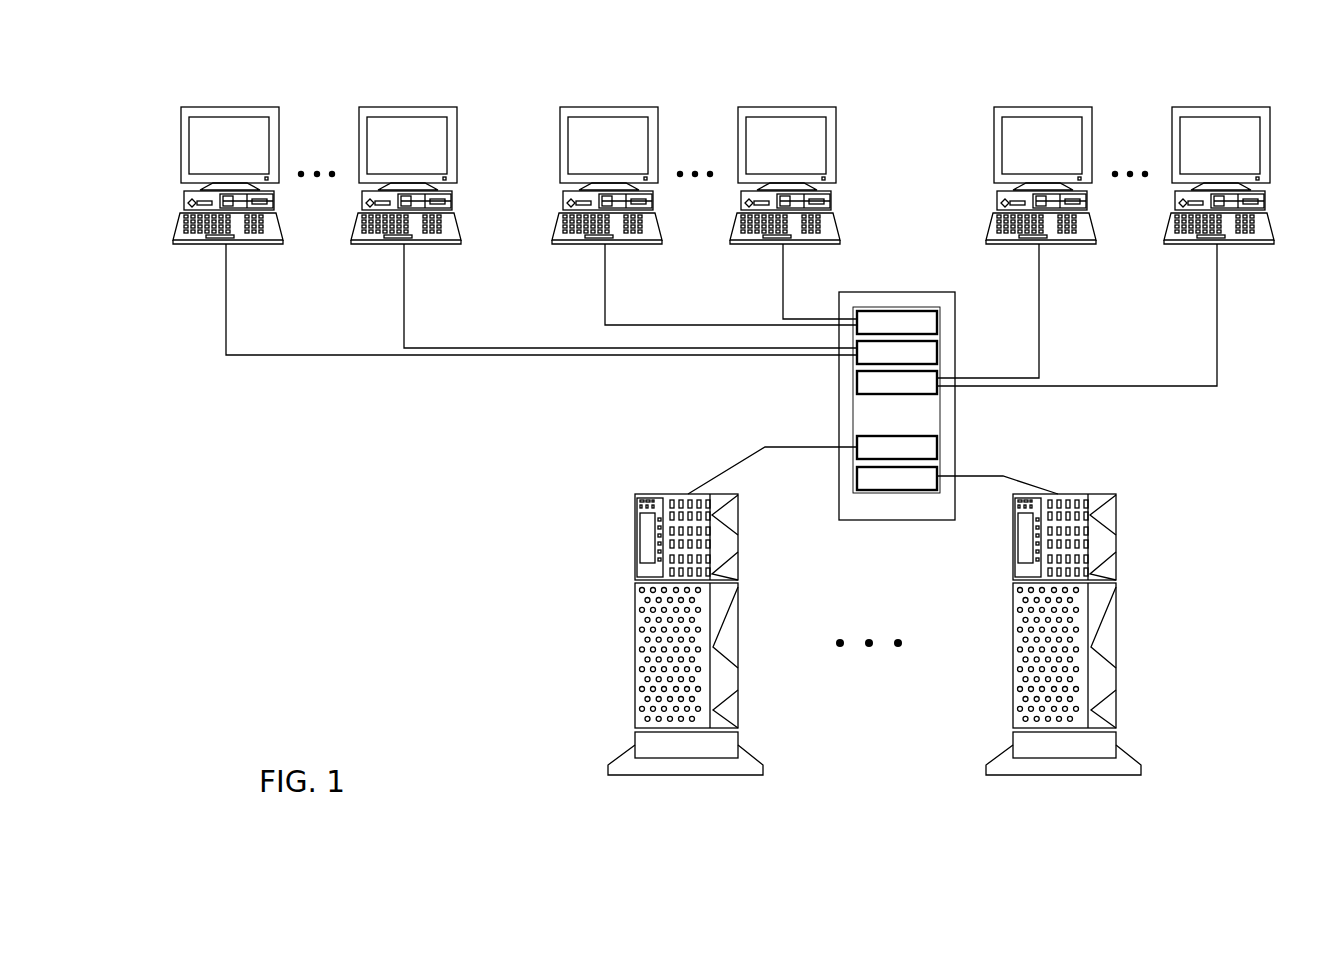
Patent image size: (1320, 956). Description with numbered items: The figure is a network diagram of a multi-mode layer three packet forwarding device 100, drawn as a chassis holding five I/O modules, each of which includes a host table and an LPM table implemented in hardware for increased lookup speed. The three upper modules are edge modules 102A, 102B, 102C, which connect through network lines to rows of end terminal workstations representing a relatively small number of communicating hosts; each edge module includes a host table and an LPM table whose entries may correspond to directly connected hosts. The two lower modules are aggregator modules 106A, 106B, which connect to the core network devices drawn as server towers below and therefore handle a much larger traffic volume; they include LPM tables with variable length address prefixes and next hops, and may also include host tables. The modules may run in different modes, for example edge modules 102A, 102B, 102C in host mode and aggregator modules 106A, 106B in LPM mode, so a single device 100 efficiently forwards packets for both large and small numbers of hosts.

The layer 3 packet forwarding device 100 is at (916, 290).
The edge module 102A is at (940, 322).
The edge module 102B is at (940, 353).
The edge module 102C is at (857, 382).
The aggregator module 106A is at (857, 477).
The aggregator module 106B is at (940, 447).